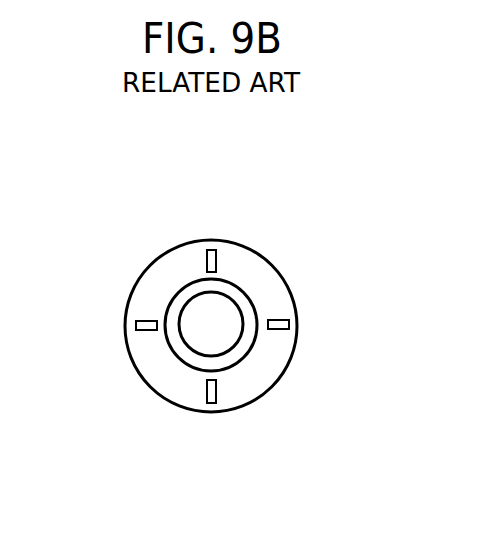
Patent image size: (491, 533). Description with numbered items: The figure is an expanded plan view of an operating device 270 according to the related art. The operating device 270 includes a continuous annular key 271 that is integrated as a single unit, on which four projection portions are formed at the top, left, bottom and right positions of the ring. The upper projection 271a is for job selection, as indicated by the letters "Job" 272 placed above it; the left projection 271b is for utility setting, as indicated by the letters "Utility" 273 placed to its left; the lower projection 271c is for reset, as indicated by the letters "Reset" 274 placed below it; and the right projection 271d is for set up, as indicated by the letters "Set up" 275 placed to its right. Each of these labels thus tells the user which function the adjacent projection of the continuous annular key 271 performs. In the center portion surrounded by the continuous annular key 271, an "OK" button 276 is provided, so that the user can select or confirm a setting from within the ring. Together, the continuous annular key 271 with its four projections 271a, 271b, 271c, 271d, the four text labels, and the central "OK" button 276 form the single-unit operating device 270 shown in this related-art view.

The operating device 270 is at (296, 188).
The continuous annular key 271 is at (283, 294).
The upper projection 271a is at (217, 258).
The left projection 271b is at (148, 321).
The lower projection 271c is at (207, 390).
The right projection 271d is at (278, 331).
The letters "Job" 272 is at (182, 213).
The letters "Utility" 273 is at (73, 349).
The letters "Reset" 274 is at (199, 457).
The letters "Set up" 275 is at (357, 308).
The "OK" button 276 is at (225, 347).